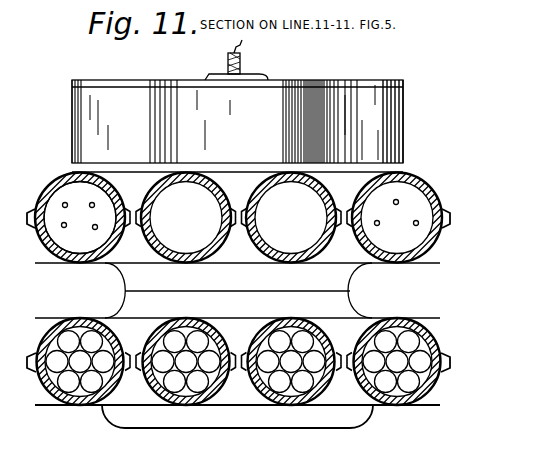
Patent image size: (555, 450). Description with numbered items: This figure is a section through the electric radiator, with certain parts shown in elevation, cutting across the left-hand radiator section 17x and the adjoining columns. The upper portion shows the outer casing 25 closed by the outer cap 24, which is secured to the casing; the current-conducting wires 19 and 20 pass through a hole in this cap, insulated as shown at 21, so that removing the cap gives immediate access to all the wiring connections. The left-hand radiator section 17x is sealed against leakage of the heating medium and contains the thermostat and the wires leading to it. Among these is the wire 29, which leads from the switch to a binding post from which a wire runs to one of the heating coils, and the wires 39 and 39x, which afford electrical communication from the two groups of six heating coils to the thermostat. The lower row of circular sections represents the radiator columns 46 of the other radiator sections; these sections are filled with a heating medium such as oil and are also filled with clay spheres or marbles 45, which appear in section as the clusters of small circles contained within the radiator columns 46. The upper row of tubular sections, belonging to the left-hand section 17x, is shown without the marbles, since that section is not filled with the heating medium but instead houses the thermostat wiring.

The wire 19 is at (242, 42).
The wire 20 is at (229, 56).
The insulation 21 is at (241, 63).
The outer cap 24 is at (332, 82).
The outer casing 25 is at (385, 115).
The left-hand radiator section 17x is at (58, 180).
The wire 29 is at (45, 248).
The wire 39 is at (95, 229).
The wire 39x is at (378, 222).
The radiator column 46 is at (64, 318).
The clay spheres or marbles 45 is at (173, 378).